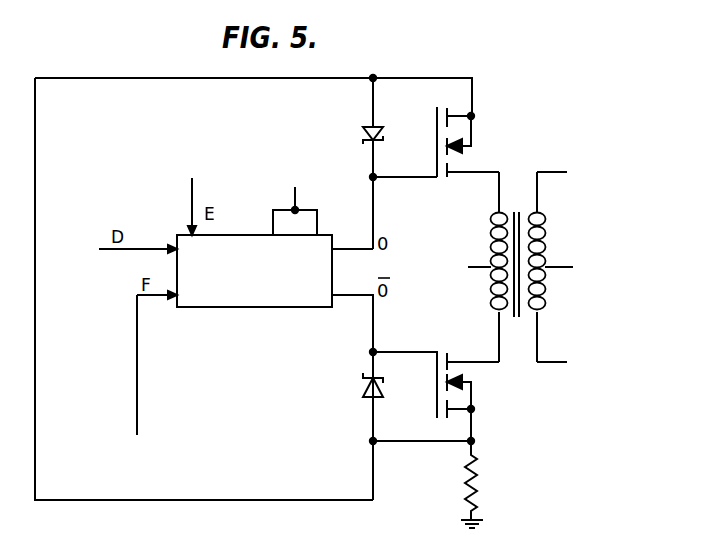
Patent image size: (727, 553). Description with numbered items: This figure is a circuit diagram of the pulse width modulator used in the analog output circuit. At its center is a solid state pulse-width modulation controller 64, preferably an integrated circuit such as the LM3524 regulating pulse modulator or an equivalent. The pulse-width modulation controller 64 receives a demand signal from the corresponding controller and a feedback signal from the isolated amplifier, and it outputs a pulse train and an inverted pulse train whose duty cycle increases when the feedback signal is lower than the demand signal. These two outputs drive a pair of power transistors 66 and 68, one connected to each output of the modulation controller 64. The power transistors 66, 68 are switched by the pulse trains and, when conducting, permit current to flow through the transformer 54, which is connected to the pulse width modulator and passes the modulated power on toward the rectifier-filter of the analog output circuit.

The transformer 54 is at (515, 318).
The pulse-width modulation controller 64 is at (334, 274).
The power transistor 66 is at (466, 152).
The power transistor 68 is at (466, 380).